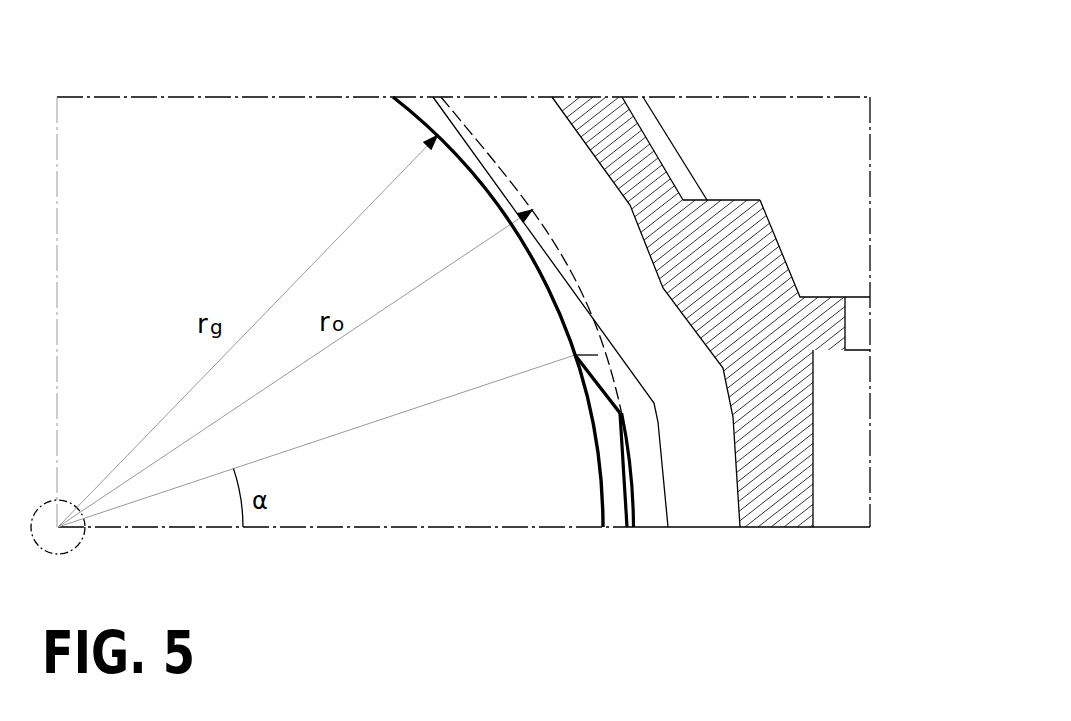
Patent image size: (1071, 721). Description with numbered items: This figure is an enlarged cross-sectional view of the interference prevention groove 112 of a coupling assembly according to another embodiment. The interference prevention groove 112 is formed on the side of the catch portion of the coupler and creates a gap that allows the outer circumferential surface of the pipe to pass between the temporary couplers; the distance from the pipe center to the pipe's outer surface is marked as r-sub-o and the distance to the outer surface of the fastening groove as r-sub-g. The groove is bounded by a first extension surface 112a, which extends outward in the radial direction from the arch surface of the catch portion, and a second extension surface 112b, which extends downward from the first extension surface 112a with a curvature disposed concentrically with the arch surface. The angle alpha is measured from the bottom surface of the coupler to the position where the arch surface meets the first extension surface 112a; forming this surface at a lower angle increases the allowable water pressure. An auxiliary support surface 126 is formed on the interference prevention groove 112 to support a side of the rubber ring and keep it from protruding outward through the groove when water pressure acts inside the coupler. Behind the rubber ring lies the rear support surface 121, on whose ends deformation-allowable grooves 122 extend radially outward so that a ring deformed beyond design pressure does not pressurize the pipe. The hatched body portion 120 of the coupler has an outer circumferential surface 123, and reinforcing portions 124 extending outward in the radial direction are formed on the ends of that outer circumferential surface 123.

The interference prevention groove 112 is at (513, 389).
The first extension surface 112a is at (582, 360).
The second extension surface 112b is at (583, 486).
The body portion 120 is at (597, 107).
The rear support surface 121 is at (573, 132).
The deformation-allowable groove 122 is at (742, 472).
The outer circumferential surface 123 is at (667, 130).
The reinforcing portion 124 is at (773, 222).
The auxiliary support surface 126 is at (610, 388).